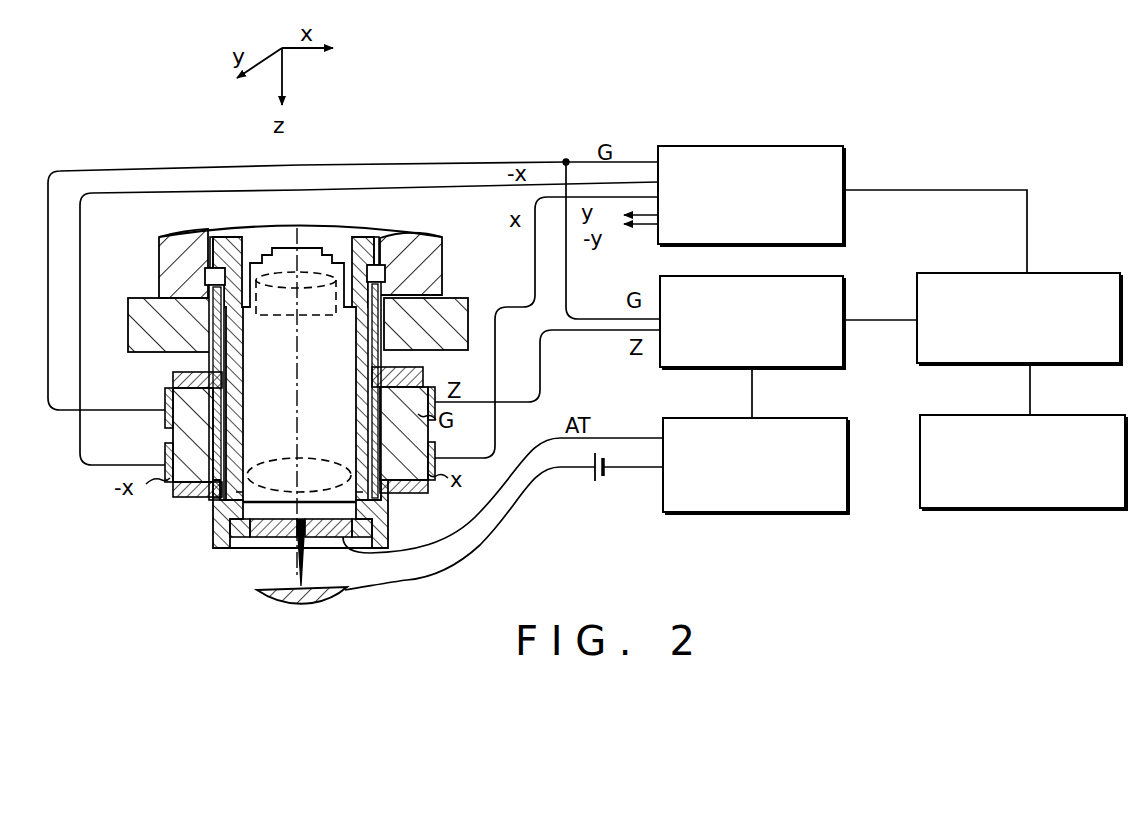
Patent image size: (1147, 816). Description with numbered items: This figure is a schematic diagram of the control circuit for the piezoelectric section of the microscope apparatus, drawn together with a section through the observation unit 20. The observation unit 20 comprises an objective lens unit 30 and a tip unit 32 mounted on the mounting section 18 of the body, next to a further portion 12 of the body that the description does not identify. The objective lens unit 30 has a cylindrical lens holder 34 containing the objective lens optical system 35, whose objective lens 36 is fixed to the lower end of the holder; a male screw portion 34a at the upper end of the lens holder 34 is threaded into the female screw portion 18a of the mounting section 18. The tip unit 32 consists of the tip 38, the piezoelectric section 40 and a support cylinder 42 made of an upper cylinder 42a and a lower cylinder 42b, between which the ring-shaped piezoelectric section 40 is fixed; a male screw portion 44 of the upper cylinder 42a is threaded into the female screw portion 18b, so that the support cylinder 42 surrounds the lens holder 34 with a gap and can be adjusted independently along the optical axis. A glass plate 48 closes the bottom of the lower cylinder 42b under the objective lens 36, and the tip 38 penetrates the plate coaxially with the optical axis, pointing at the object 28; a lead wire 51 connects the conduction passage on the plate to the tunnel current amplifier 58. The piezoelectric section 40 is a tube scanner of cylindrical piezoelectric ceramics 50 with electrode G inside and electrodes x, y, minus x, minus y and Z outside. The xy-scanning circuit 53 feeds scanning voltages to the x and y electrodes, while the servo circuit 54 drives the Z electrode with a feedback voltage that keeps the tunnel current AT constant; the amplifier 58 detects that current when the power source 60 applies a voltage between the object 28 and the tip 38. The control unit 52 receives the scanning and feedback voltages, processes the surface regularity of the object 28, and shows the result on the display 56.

The upper housing block 12 is at (160, 252).
The mounting section 18 is at (280, 275).
The female screw portion 18a is at (377, 237).
The female screw portion 18b is at (168, 331).
The observation unit 20 is at (158, 504).
The object 28 is at (286, 596).
The objective lens unit 30 is at (381, 496).
The tip unit 32 is at (262, 537).
The cylindrical lens holder 34 is at (225, 504).
The male screw portion 34a is at (211, 237).
The objective lens optical system 35 is at (345, 319).
The objective lens 36 is at (316, 464).
The tip 38 is at (312, 545).
The piezoelectric section 40 is at (164, 437).
The support cylinder 42 is at (218, 550).
The upper cylinder 42a is at (429, 373).
The lower cylinder 42b is at (408, 492).
The male screw portion 44 is at (214, 342).
The glass plate 48 is at (276, 537).
The cylindrical piezoelectric ceramics 50 is at (428, 432).
The lead wire 51 is at (406, 582).
The control unit 52 is at (1082, 274).
The xy-scanning circuit 53 is at (800, 146).
The servo circuit 54 is at (843, 290).
The display 56 is at (1084, 420).
The tunnel current amplifier 58 is at (848, 434).
The power source 60 is at (604, 472).